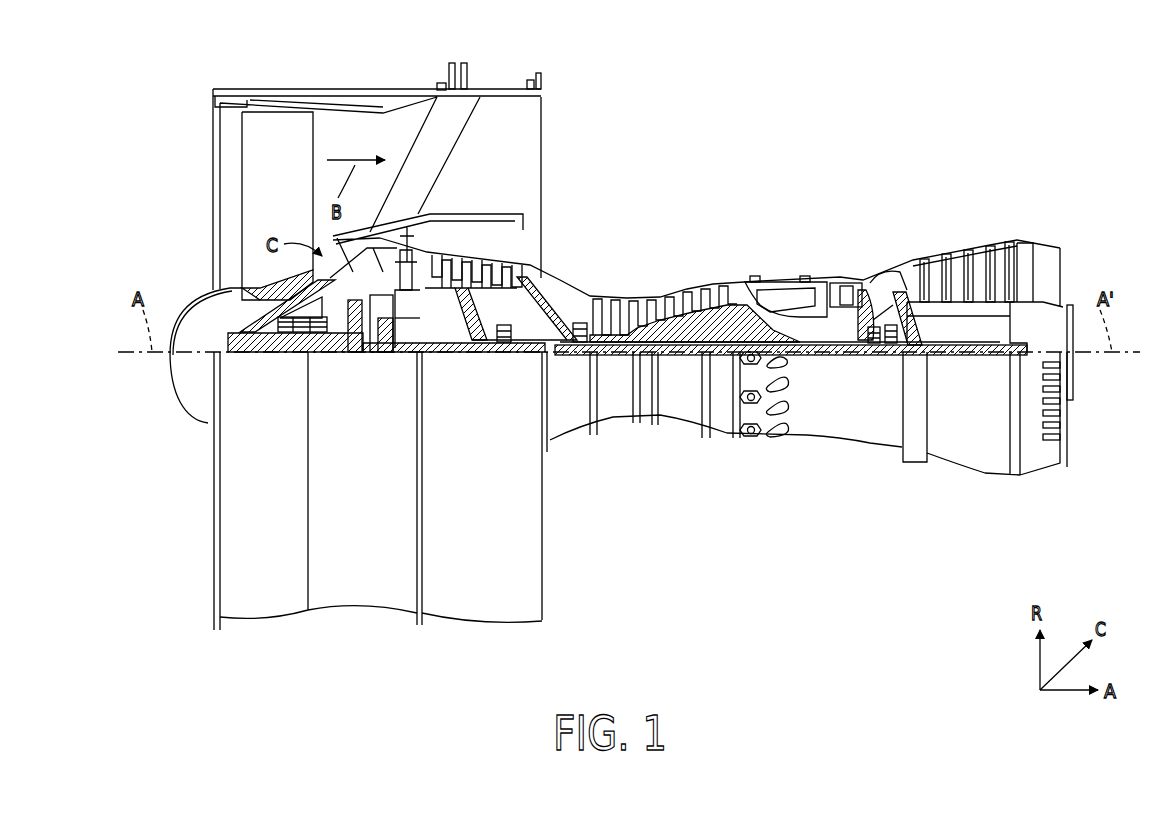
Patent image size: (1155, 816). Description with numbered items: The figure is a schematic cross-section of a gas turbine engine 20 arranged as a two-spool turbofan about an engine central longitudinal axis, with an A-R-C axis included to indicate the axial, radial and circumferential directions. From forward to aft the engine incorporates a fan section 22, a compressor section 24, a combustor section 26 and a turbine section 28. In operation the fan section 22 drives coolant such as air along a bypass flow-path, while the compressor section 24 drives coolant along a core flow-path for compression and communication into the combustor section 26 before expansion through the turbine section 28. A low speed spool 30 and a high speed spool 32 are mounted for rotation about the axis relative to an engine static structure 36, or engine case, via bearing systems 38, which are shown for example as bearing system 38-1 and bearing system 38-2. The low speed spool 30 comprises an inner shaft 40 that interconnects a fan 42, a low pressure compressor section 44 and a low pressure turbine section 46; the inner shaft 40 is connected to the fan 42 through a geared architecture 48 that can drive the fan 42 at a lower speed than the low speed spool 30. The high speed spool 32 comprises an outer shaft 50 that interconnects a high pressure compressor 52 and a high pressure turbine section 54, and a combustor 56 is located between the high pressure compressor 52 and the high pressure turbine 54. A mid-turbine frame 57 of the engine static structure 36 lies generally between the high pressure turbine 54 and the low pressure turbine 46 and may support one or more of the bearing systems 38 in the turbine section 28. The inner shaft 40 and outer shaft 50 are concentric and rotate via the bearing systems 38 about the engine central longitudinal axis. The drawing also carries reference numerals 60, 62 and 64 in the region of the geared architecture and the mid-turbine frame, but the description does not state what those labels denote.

The gas turbine engine 20 is at (828, 87).
The fan section 22 is at (398, 76).
The compressor section 24 is at (420, 185).
The combustor section 26 is at (830, 185).
The turbine section 28 is at (1015, 185).
The low speed spool 30 is at (687, 362).
The high speed spool 32 is at (730, 316).
The engine static structure 36 is at (196, 636).
The bearing system 38 is at (884, 345).
The bearing system 38-1 is at (287, 334).
The bearing system 38-2 is at (503, 343).
The inner shaft 40 is at (560, 355).
The fan 42 is at (279, 206).
The low pressure compressor section 44 is at (483, 266).
The low pressure turbine section 46 is at (962, 252).
The geared architecture 48 is at (380, 378).
The outer shaft 50 is at (785, 337).
The high pressure compressor 52 is at (680, 295).
The high pressure turbine section 54 is at (845, 283).
The combustor 56 is at (800, 296).
The mid-turbine frame 57 is at (890, 291).
The gear system component 60 is at (395, 327).
The gear system component 62 is at (395, 305).
The airfoils of mid-turbine frame 64 is at (884, 292).